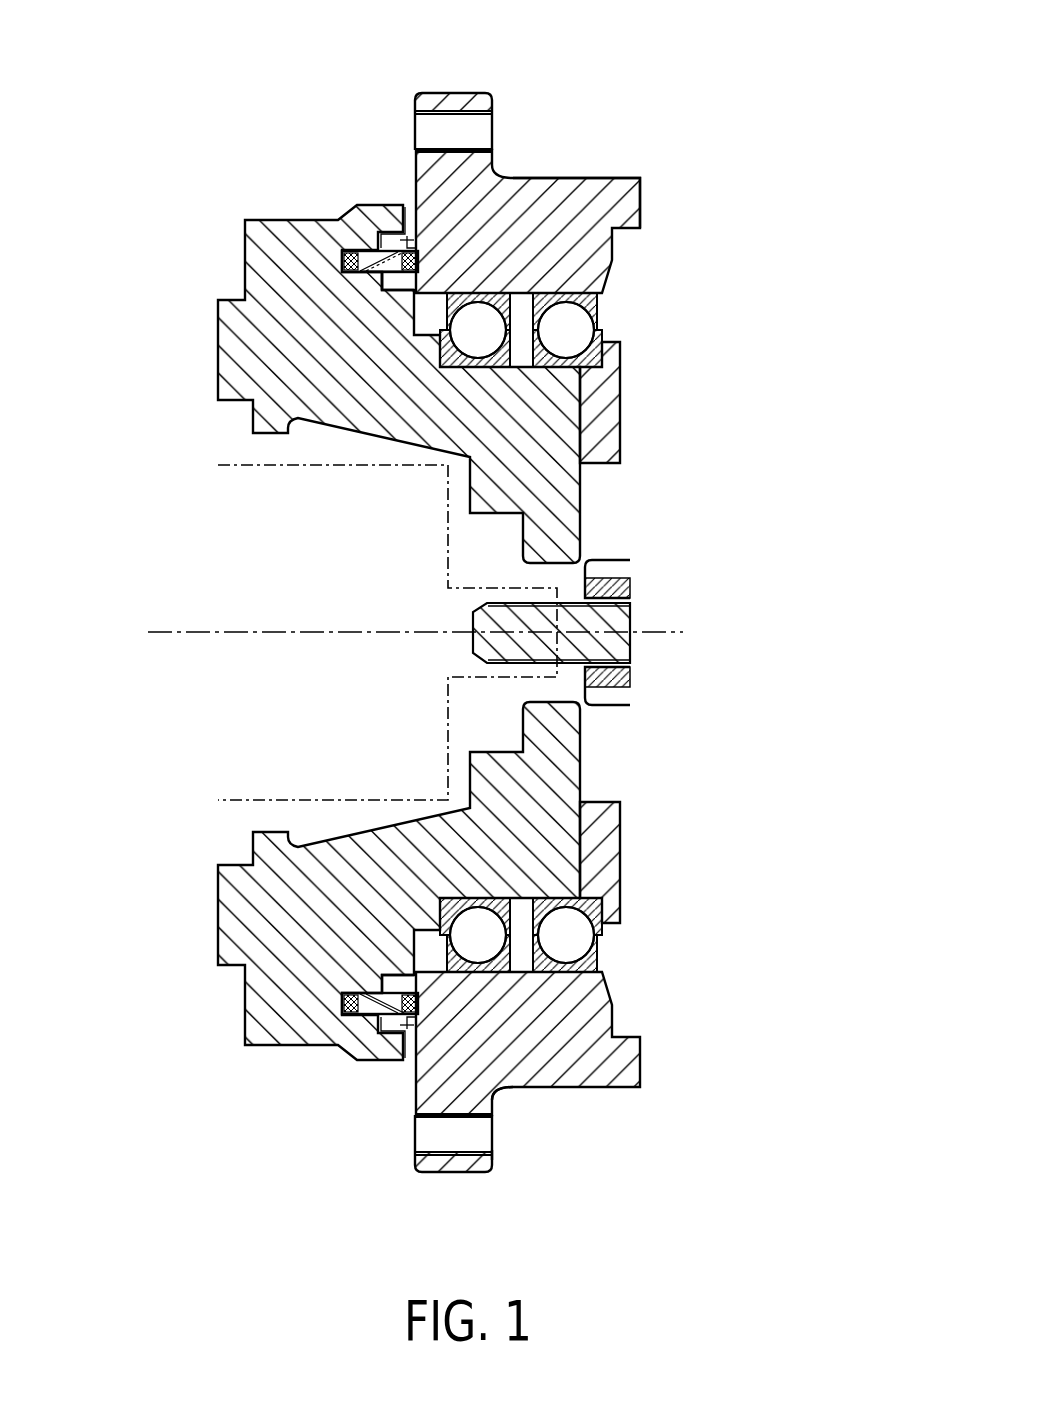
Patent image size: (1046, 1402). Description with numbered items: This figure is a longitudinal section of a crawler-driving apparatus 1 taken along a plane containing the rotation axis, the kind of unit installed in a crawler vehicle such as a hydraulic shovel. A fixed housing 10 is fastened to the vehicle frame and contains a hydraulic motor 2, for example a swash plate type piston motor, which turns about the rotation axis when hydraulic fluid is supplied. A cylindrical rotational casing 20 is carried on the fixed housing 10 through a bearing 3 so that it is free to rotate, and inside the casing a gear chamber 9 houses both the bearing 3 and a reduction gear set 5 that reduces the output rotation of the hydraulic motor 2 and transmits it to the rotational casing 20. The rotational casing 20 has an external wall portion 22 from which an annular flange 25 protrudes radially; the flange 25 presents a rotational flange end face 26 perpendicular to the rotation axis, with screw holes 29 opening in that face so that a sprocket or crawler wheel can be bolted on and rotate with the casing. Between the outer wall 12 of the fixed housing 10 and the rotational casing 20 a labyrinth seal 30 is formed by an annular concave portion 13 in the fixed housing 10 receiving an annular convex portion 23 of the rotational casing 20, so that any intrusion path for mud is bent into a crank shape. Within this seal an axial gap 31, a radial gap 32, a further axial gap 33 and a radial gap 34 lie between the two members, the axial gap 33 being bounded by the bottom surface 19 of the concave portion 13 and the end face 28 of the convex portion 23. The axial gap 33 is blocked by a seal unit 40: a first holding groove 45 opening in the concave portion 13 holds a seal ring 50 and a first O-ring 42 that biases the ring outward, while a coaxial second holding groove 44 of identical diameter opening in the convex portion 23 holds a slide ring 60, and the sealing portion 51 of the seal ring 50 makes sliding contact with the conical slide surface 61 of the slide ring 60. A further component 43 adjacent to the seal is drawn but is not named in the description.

The crawler-driving apparatus 1 is at (629, 178).
The hydraulic motor 2 is at (220, 802).
The bearing 3 is at (606, 300).
The reduction gear set 5 is at (637, 555).
The gear chamber 9 is at (384, 282).
The fixed housing 10 is at (243, 1044).
The outer wall 12 is at (300, 218).
The annular concave portion 13 is at (408, 1020).
The bottom surface 19 is at (370, 1022).
The rotational casing 20 is at (638, 1086).
The external wall portion 22 is at (600, 178).
The annular convex portion 23 is at (397, 1035).
The annular flange 25 is at (440, 1172).
The rotational flange end face 26 is at (496, 1102).
The end face 28 is at (377, 1038).
The screw holes 29 is at (496, 1152).
The labyrinth seal 30 is at (383, 84).
The axial gap 31 is at (408, 240).
The radial gap 32 is at (398, 246).
The axial gap 33 is at (384, 246).
The radial gap 34 is at (408, 292).
The seal unit 40 is at (392, 284).
The first O-ring 42 is at (372, 262).
The outer member end face 43 is at (440, 290).
The second holding groove 44 is at (390, 1005).
The first holding groove 45 is at (360, 1003).
The seal ring 50 is at (345, 268).
The sealing portion 51 is at (343, 258).
The slide ring 60 is at (420, 250).
The slide surface 61 is at (371, 276).